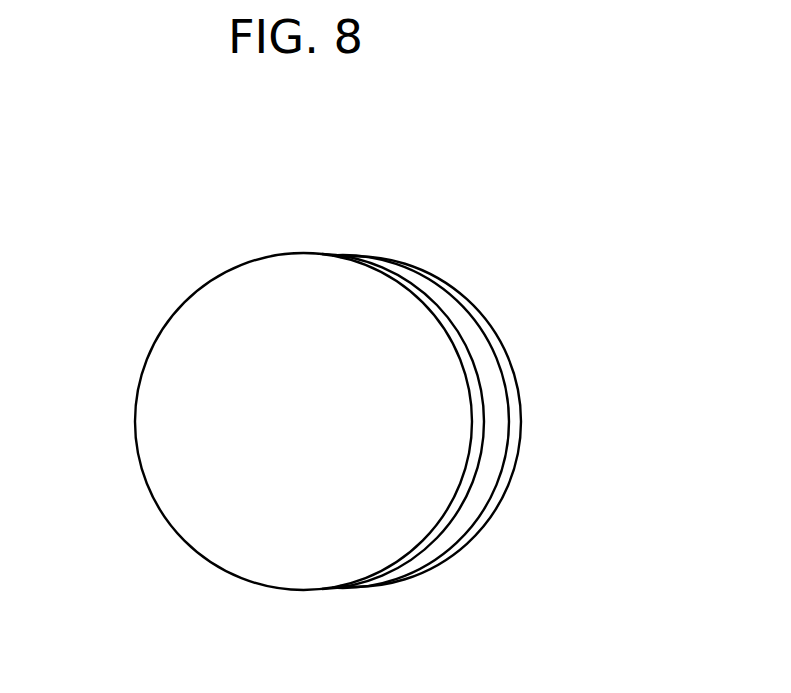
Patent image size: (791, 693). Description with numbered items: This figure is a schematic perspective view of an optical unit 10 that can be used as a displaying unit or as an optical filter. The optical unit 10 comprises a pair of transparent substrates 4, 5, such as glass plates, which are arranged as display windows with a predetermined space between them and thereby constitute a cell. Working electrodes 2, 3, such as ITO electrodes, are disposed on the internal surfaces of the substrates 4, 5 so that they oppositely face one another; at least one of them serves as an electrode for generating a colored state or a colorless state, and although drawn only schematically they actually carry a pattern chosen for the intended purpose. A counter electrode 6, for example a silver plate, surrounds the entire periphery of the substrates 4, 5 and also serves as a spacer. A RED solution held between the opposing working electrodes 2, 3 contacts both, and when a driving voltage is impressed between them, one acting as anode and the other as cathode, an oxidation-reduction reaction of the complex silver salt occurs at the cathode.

The working electrode 2 is at (314, 252).
The working electrode 3 is at (378, 249).
The transparent substrate 4 is at (177, 371).
The transparent substrate 5 is at (515, 408).
The counter electrode 6 is at (473, 342).
The optical unit 10 is at (503, 340).